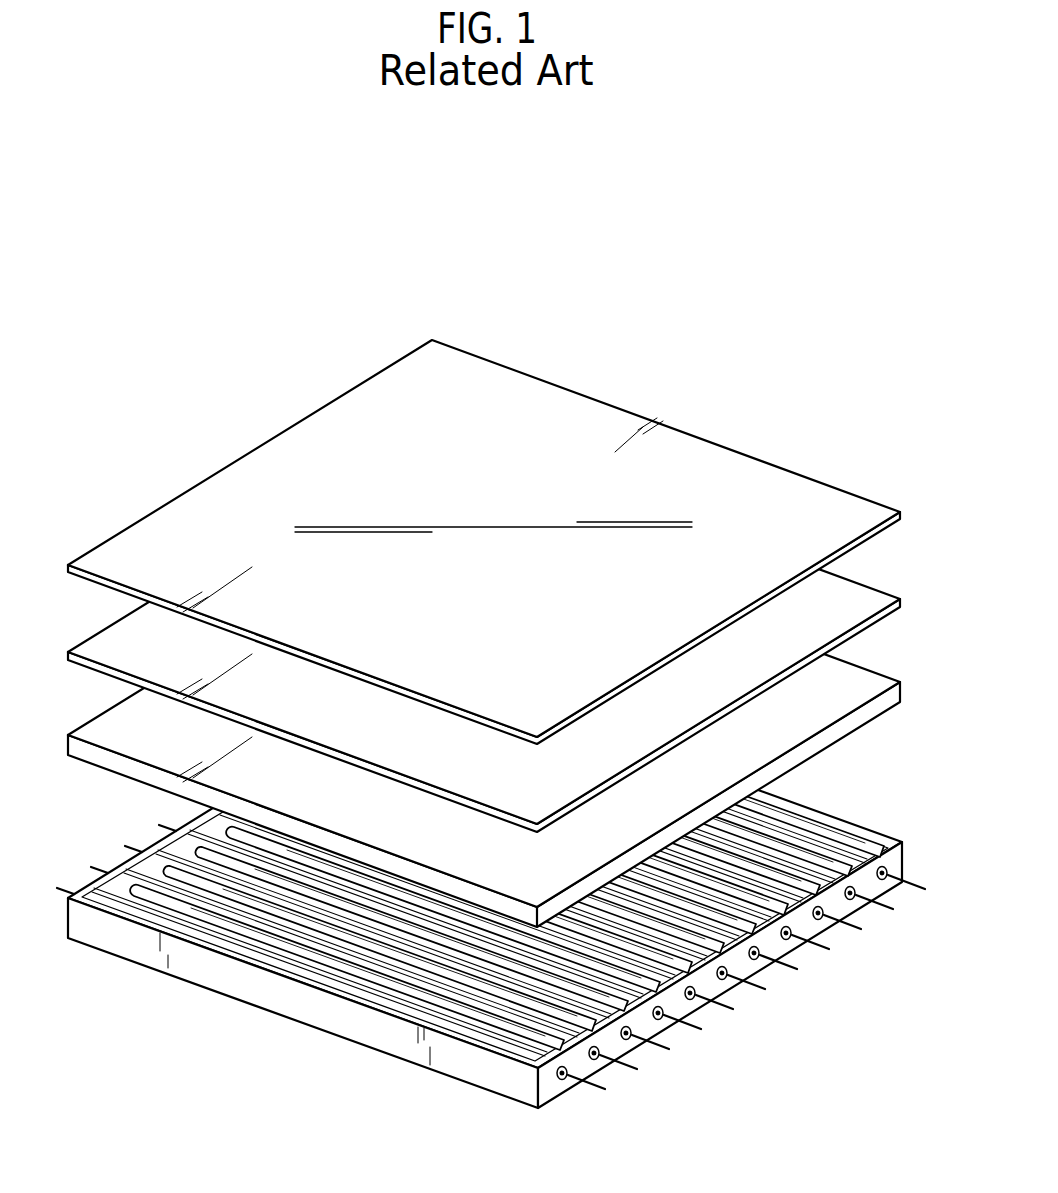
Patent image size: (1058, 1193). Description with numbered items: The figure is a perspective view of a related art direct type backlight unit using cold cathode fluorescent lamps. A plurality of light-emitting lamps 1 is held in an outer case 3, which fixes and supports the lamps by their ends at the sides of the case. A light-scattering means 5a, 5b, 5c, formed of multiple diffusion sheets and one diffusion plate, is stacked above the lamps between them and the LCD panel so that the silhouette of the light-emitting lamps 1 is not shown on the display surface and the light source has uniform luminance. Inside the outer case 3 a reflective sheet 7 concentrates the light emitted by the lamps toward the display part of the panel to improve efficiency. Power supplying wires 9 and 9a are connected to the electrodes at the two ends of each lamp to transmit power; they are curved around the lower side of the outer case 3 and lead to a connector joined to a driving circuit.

The light-emitting lamp 1 is at (320, 948).
The outer case 3 is at (512, 1082).
The light-scattering means 5a is at (847, 682).
The light-scattering means 5b is at (847, 596).
The light-scattering means 5c is at (847, 502).
The reflective sheet 7 is at (452, 978).
The power supplying wire 9 is at (597, 1090).
The power supplying wire 9a is at (57, 888).